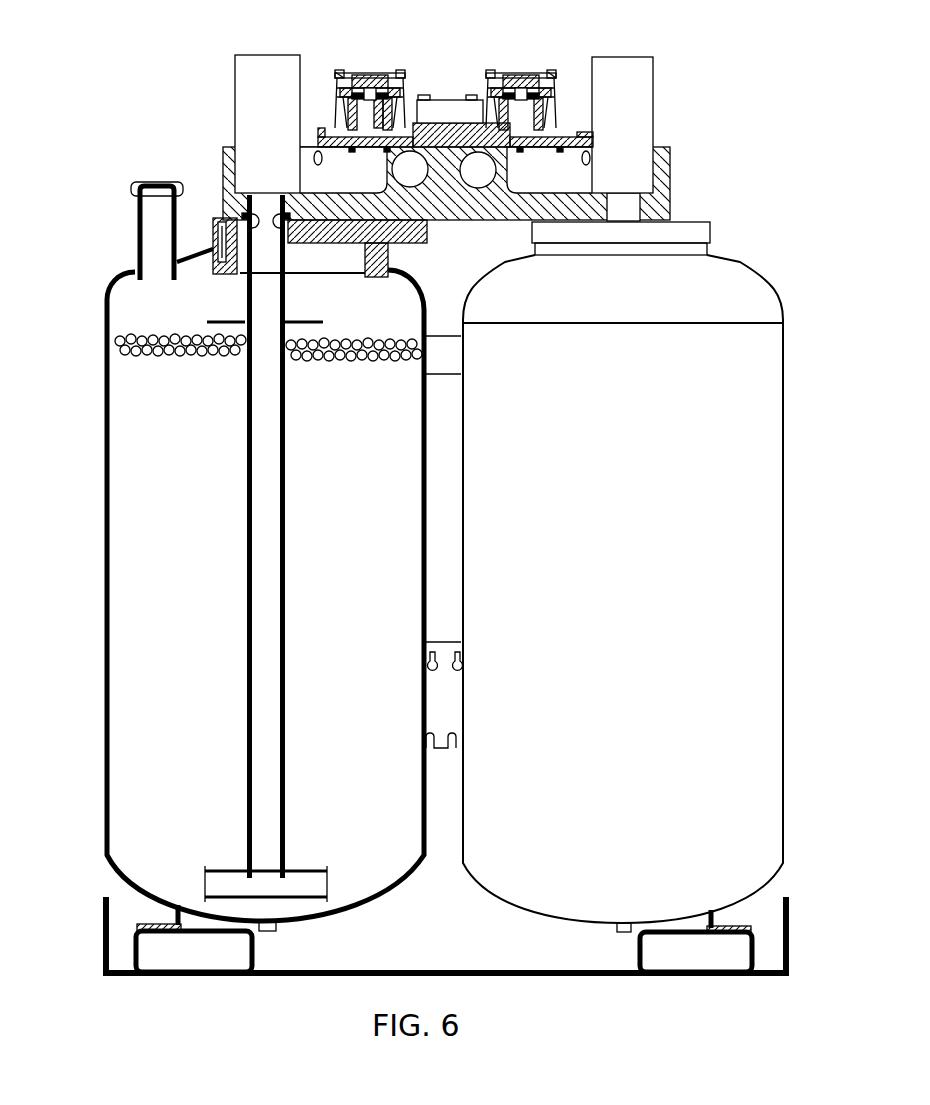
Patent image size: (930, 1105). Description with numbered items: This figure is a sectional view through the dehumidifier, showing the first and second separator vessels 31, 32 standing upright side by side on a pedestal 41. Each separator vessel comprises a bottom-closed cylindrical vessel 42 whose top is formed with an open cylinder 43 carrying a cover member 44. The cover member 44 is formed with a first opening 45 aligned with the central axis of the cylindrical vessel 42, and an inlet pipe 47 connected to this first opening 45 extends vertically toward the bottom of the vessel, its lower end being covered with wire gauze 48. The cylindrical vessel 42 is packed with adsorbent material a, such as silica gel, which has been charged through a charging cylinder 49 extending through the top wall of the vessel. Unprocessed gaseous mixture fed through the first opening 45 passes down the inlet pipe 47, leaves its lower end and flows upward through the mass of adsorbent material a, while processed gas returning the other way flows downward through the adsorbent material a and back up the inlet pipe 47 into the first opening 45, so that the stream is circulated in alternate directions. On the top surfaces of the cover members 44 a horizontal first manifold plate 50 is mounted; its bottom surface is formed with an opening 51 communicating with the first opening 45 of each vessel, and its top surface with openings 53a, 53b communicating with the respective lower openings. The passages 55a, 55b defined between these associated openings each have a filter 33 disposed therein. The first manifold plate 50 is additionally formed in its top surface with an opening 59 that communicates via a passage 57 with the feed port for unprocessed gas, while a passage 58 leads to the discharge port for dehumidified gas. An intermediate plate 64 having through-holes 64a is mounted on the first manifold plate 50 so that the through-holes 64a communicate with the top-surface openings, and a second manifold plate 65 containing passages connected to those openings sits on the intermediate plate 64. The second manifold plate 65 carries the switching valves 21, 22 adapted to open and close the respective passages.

The switching valve 21 is at (369, 57).
The switching valve 22 is at (528, 57).
The first separator vessel 31 is at (236, 590).
The second separator vessel 32 is at (792, 398).
The filter 33 is at (274, 65).
The pedestal 41 is at (436, 968).
The cylindrical vessel 42 is at (105, 565).
The open cylinder 43 is at (388, 266).
The cover member 44 is at (347, 237).
The first opening 45 is at (225, 217).
The inlet pipe 47 is at (287, 547).
The wire gauze 48 is at (330, 878).
The charging cylinder 49 is at (140, 238).
The first manifold plate 50 is at (477, 225).
The opening 51 is at (632, 196).
The opening 53a is at (338, 88).
The opening 53b is at (531, 150).
The passage 55a is at (319, 156).
The passage 55b is at (586, 158).
The passage 57 is at (420, 183).
The passage 58 is at (485, 182).
The opening 59 is at (417, 157).
The intermediate plate 64 is at (468, 140).
The through-hole 64a is at (382, 142).
The second manifold plate 65 is at (440, 135).
The adsorbent material a is at (125, 340).